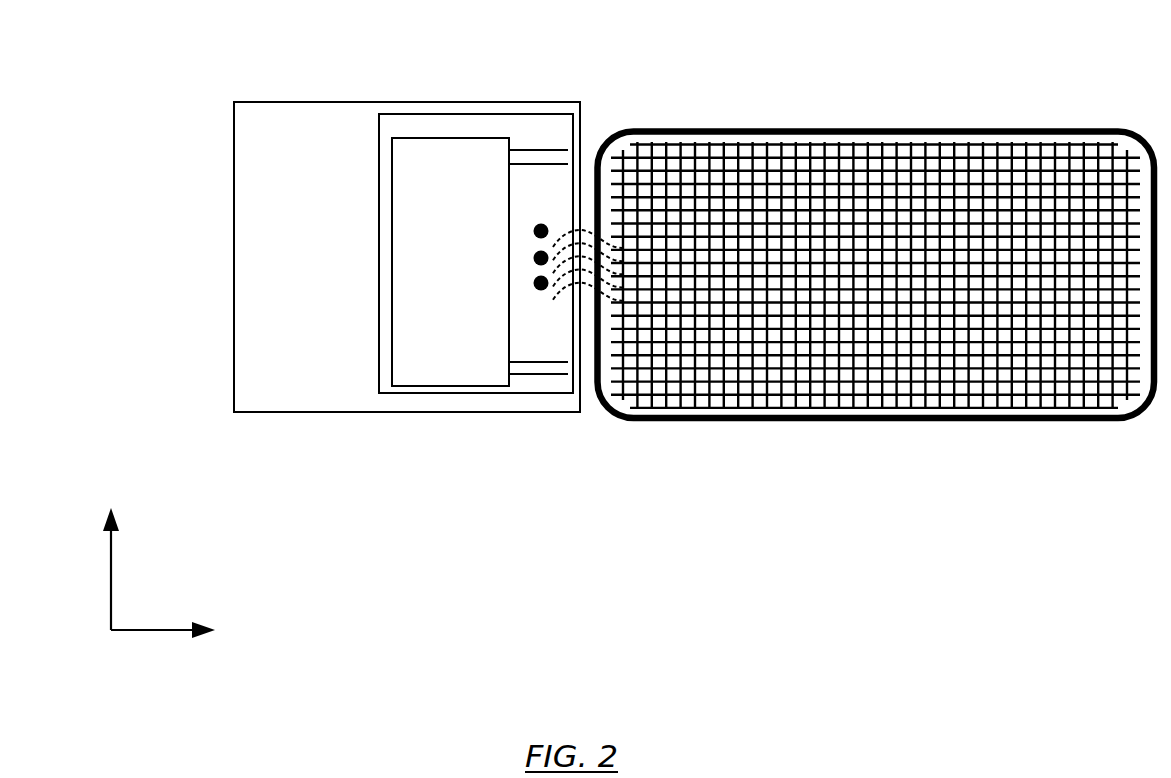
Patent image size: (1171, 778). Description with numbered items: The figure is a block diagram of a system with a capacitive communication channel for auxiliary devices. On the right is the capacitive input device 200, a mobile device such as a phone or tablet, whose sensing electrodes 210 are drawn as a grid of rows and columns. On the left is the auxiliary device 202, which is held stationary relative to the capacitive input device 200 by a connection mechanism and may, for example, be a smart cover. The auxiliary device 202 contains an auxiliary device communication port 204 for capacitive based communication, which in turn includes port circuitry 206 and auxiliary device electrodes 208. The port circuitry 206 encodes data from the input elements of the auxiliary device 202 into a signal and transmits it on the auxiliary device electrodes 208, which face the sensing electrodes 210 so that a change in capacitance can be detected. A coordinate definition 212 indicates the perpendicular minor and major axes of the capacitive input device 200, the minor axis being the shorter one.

The capacitive input device 200 is at (875, 432).
The auxiliary device 202 is at (283, 242).
The auxiliary device communication port 204 is at (478, 393).
The port circuitry 206 is at (472, 244).
The auxiliary device electrodes 208 is at (539, 382).
The sensing electrodes 210 is at (827, 203).
The coordinate definition 212 is at (230, 672).